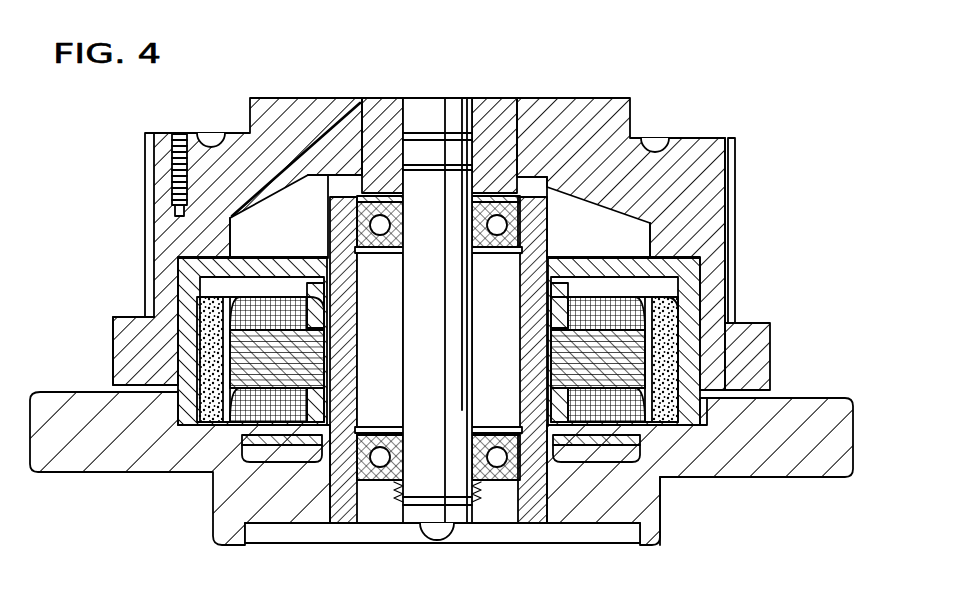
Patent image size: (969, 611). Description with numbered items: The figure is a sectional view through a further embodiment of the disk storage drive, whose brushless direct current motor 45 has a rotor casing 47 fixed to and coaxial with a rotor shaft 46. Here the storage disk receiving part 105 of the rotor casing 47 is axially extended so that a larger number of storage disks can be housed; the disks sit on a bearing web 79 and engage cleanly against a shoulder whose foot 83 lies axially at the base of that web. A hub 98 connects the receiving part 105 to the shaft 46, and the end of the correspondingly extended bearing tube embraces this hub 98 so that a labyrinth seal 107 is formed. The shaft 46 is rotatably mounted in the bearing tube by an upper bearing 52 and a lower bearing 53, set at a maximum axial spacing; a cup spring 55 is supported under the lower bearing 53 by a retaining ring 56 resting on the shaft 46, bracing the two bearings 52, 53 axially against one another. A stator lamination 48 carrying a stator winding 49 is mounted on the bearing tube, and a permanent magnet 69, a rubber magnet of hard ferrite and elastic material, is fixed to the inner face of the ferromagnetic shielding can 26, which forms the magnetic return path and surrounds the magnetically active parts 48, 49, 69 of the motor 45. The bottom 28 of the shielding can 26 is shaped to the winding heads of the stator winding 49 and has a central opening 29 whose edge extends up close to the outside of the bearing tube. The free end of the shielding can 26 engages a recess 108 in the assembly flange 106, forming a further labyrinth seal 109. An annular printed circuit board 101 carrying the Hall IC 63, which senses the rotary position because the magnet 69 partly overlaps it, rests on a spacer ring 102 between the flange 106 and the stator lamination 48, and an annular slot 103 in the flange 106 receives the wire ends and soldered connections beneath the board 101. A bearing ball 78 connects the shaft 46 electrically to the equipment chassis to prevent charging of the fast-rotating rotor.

The shielding can 26 is at (707, 378).
The bottom of shielding can 28 is at (605, 262).
The central opening 29 is at (325, 250).
The brushless direct current motor 45 is at (755, 191).
The rotor shaft 46 is at (452, 110).
The rotor casing 47 is at (140, 247).
The stator lamination 48 is at (237, 353).
The stator winding 49 is at (215, 305).
The bearing 52 is at (386, 258).
The bearing 53 is at (386, 430).
The cup spring 55 is at (392, 492).
The retaining ring 56 is at (480, 512).
The Hall IC 63 is at (200, 472).
The permanent magnet 69 is at (718, 268).
The bearing ball 78 is at (442, 532).
The bearing web 79 is at (735, 155).
The shoulder foot 83 is at (727, 330).
The hub 98 is at (495, 125).
The printed circuit board 101 is at (605, 455).
The spacer ring 102 is at (345, 375).
The annular slot 103 is at (290, 455).
The storage disk receiving part 105 is at (312, 130).
The assembly flange 106 is at (820, 465).
The labyrinth seal 107 is at (543, 140).
The recess 108 is at (688, 430).
The labyrinth seal 109 is at (705, 428).